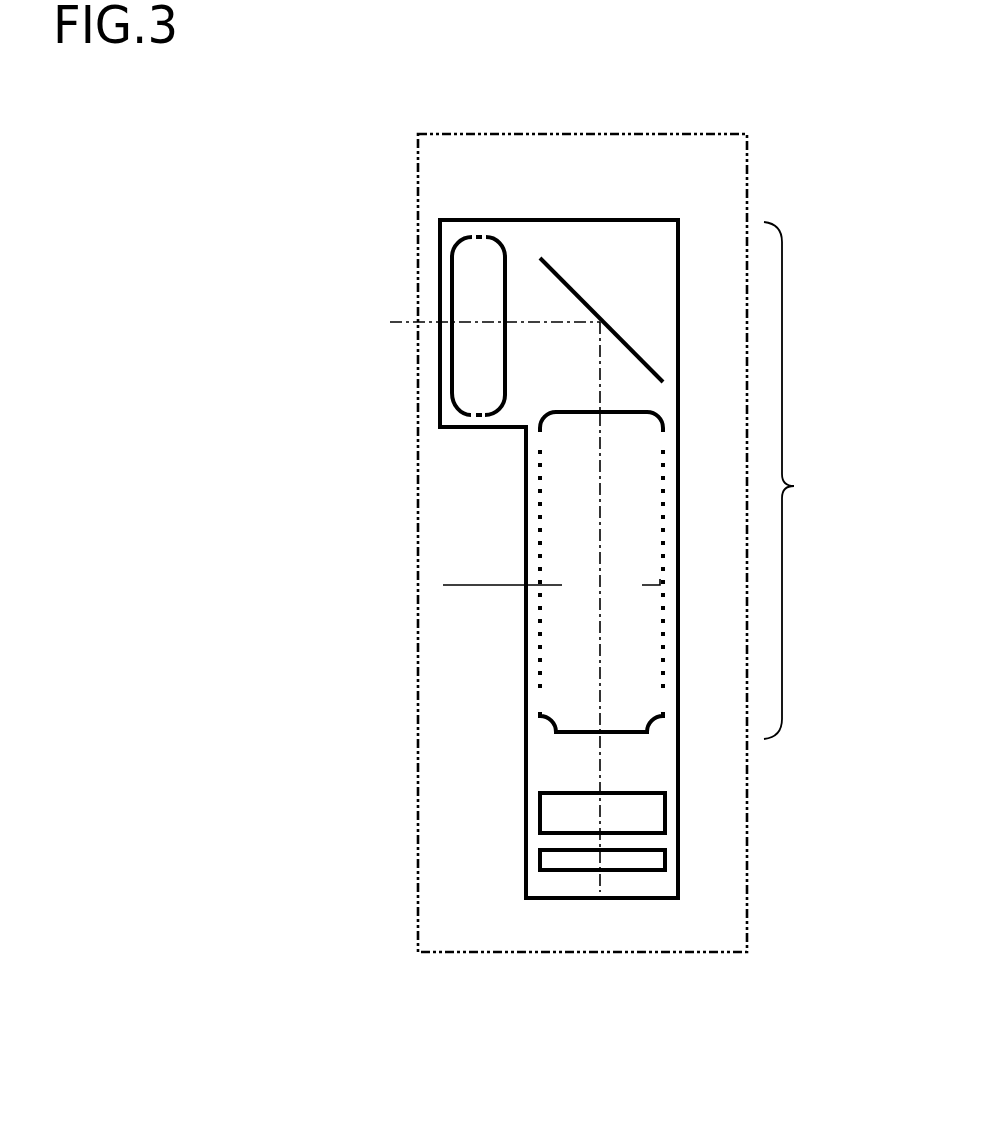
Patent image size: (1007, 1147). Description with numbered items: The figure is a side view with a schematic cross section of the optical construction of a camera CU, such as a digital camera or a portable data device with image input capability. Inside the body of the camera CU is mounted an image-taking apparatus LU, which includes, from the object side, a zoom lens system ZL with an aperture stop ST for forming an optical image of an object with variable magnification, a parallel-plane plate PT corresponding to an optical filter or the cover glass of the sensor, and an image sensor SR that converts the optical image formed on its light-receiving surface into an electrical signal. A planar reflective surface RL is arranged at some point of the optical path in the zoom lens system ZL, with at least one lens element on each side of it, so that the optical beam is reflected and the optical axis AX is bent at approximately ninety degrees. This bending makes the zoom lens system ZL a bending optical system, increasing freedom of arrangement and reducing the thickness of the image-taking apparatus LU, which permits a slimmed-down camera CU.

The camera CU is at (419, 910).
The image-taking apparatus LU is at (528, 816).
The optical axis AX is at (402, 322).
The reflective surface RL is at (552, 267).
The aperture stop ST is at (531, 585).
The zoom lens system ZL is at (802, 480).
The parallel-plane plate PT is at (668, 811).
The image sensor SR is at (668, 857).